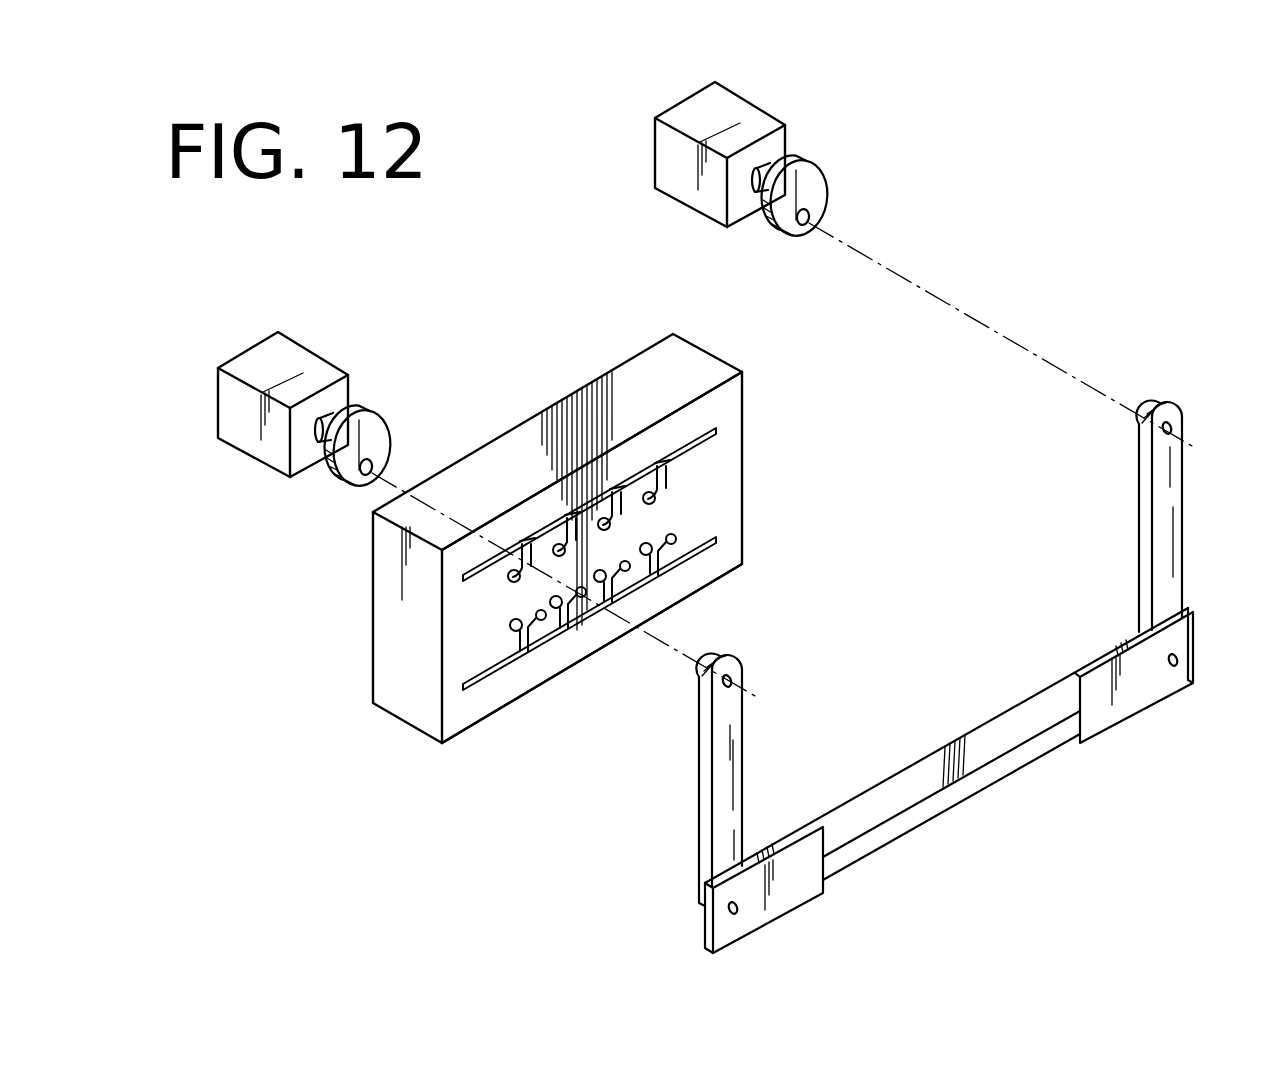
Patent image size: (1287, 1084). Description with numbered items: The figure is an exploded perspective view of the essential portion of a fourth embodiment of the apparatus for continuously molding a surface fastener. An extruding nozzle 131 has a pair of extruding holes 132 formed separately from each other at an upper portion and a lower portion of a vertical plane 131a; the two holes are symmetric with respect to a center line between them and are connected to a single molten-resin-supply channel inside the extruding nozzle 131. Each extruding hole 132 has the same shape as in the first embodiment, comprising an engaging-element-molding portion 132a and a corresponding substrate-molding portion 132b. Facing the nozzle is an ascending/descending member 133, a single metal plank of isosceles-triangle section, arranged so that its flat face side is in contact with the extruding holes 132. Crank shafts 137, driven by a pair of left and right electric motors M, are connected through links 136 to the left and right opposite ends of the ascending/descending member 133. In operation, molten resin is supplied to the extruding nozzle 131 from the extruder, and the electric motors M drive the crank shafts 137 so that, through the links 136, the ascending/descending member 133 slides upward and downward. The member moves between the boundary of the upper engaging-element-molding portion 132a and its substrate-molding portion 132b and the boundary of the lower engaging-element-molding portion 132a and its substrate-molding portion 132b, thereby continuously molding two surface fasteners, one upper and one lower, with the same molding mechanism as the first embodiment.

The extruding nozzle 131 is at (403, 725).
The vertical plane 131a is at (455, 652).
The extruding hole 132 is at (657, 452).
The engaging-element-molding portion 132a is at (673, 533).
The substrate-molding portion 132b is at (697, 550).
The ascending/descending member 133 is at (800, 903).
The link 136 is at (722, 768).
The crank shaft 137 is at (343, 482).
The electric motor M is at (315, 370).